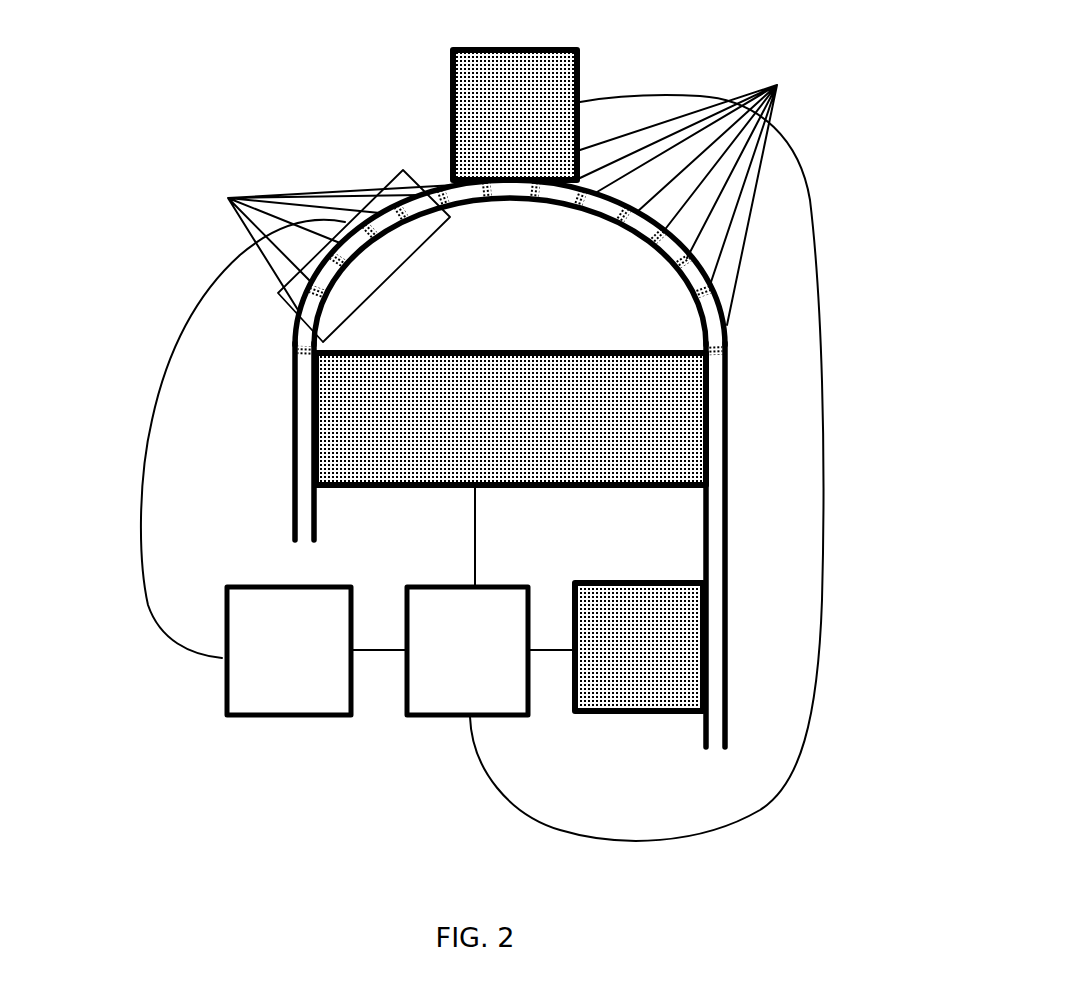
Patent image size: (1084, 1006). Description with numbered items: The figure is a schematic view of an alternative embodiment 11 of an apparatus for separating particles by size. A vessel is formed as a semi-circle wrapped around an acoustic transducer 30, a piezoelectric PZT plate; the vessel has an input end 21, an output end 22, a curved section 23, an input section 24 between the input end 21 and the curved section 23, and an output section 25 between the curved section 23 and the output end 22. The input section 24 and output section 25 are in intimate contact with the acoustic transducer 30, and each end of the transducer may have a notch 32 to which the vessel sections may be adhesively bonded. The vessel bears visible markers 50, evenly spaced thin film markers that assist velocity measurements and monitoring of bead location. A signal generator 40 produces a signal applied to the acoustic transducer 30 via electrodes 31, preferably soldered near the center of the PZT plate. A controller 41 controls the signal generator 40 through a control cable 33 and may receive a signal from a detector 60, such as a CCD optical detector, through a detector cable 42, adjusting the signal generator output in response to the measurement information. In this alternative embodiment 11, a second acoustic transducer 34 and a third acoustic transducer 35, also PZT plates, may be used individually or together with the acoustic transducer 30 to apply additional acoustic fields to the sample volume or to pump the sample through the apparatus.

The alternative embodiment 11 is at (268, 53).
The input end 21 is at (720, 748).
The output end 22 is at (293, 537).
The curved section 23 is at (453, 173).
The input section 24 is at (710, 403).
The output section 25 is at (303, 432).
The acoustic transducer 30 is at (687, 435).
The electrodes 31 is at (475, 523).
The notch 32 is at (310, 378).
The control cable 33 is at (385, 658).
The second acoustic transducer 34 is at (680, 670).
The third acoustic transducer 35 is at (552, 70).
The signal generator 40 is at (452, 703).
The controller 41 is at (268, 703).
The detector cable 42 is at (157, 645).
The visible markers 50 is at (503, 177).
The detector 60 is at (401, 172).